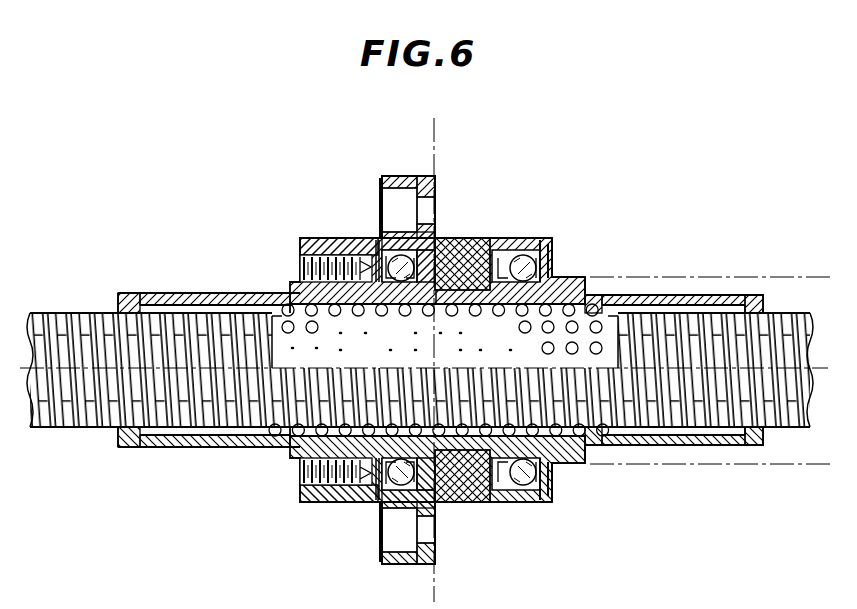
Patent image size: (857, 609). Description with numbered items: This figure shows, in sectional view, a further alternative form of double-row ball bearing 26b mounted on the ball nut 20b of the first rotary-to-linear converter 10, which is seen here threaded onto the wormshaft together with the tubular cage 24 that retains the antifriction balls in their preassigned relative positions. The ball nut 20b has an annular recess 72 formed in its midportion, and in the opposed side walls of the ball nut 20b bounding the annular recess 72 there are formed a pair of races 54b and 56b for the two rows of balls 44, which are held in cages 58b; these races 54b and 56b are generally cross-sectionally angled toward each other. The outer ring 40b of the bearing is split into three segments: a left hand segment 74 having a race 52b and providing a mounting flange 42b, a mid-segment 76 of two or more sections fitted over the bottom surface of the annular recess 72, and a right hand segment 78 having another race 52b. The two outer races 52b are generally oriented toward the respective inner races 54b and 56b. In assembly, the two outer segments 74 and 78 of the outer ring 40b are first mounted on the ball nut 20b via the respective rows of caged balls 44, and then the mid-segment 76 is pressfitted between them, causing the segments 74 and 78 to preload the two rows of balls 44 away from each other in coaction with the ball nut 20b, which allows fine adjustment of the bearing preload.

The first rotary-to-linear converter 10 is at (290, 474).
The ball nut 20b is at (316, 240).
The cage 24 is at (278, 348).
The double-row ball bearing 26b is at (381, 178).
The outer ring 40b is at (545, 236).
The mounting flange 42b is at (398, 176).
The balls 44 is at (400, 285).
The outer races 52b is at (380, 238).
The race 54b is at (552, 290).
The race 56b is at (372, 262).
The cages 58b is at (382, 503).
The annular recess 72 is at (440, 292).
The left hand segment 74 is at (428, 242).
The mid-segment 76 is at (470, 255).
The right hand segment 78 is at (550, 246).